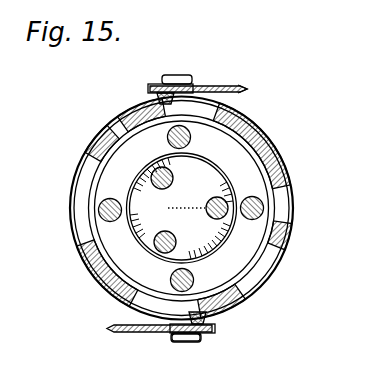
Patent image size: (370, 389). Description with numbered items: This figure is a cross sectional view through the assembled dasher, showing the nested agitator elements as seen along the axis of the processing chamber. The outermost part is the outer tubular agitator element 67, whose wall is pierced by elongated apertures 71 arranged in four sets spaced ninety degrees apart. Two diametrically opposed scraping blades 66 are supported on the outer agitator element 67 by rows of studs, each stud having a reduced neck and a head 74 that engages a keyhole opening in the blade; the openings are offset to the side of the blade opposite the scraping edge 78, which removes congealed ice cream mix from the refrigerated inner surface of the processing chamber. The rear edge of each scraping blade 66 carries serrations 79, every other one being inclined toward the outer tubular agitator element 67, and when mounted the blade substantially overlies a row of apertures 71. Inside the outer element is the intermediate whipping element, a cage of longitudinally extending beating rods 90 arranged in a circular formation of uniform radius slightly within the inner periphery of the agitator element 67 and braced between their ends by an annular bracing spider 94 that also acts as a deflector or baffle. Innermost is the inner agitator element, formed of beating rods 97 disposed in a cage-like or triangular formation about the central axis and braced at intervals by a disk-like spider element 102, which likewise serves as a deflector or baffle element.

The scraping blade 66 is at (221, 83).
The outer tubular agitator element 67 is at (84, 281).
The elongated apertures 71 is at (75, 175).
The head 74 is at (190, 342).
The scraping edge 78 is at (244, 90).
The serrations 79 is at (167, 100).
The beating rods 90 is at (100, 207).
The annular bracing spider 94 is at (244, 162).
The beating rods 97 is at (160, 189).
The disk-like spider element 102 is at (195, 170).